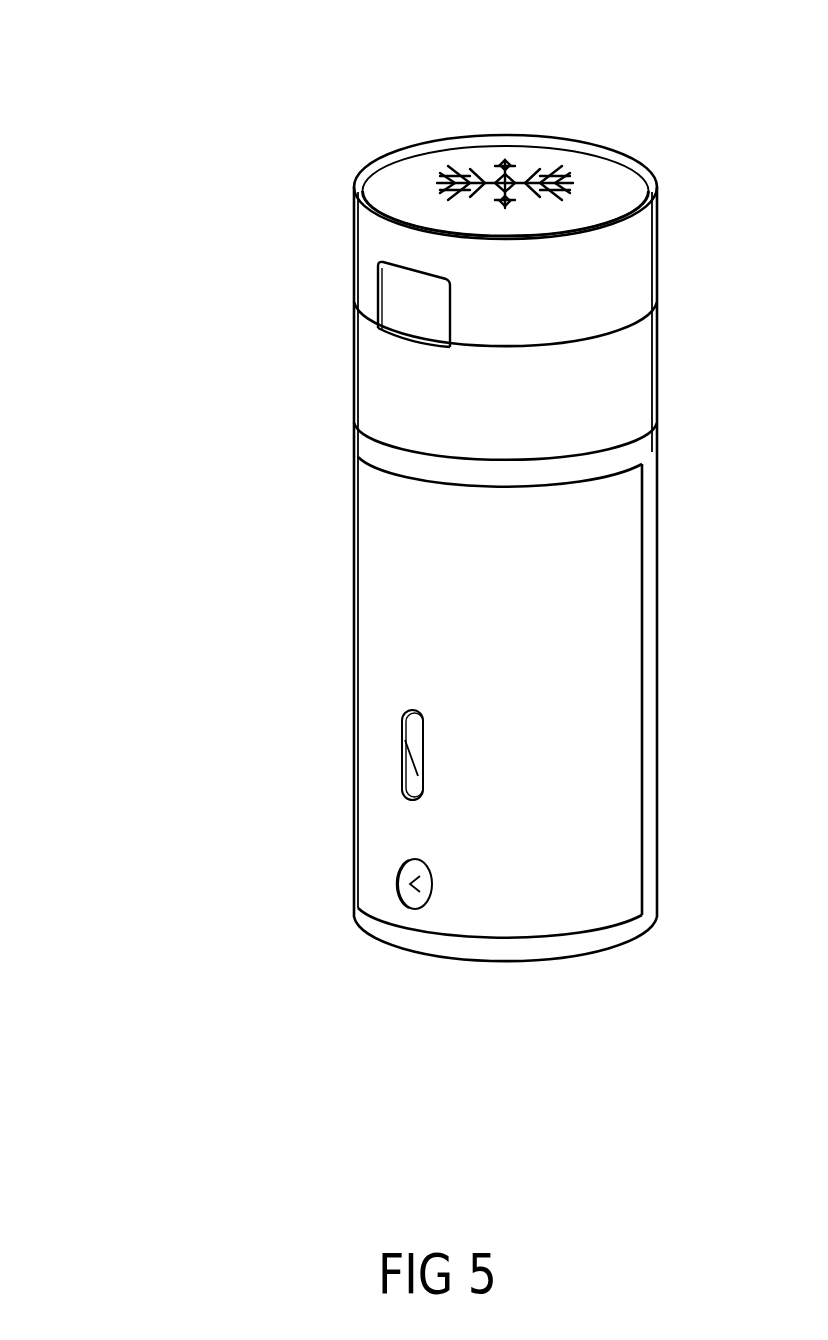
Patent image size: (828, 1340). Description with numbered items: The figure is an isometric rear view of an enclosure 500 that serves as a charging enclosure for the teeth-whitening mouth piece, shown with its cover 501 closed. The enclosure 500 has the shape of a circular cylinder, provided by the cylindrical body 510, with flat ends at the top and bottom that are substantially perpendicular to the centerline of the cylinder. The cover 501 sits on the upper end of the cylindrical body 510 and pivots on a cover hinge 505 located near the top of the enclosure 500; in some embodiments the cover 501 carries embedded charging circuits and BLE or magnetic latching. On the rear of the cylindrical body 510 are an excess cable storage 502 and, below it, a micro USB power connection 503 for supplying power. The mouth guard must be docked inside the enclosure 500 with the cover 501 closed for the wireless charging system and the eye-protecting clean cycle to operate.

The enclosure 500 is at (214, 237).
The cover 501 is at (403, 173).
The cover hinge 505 is at (403, 302).
The cylindrical body 510 is at (397, 552).
The excess cable storage 502 is at (397, 757).
The micro USB power connection 503 is at (388, 880).